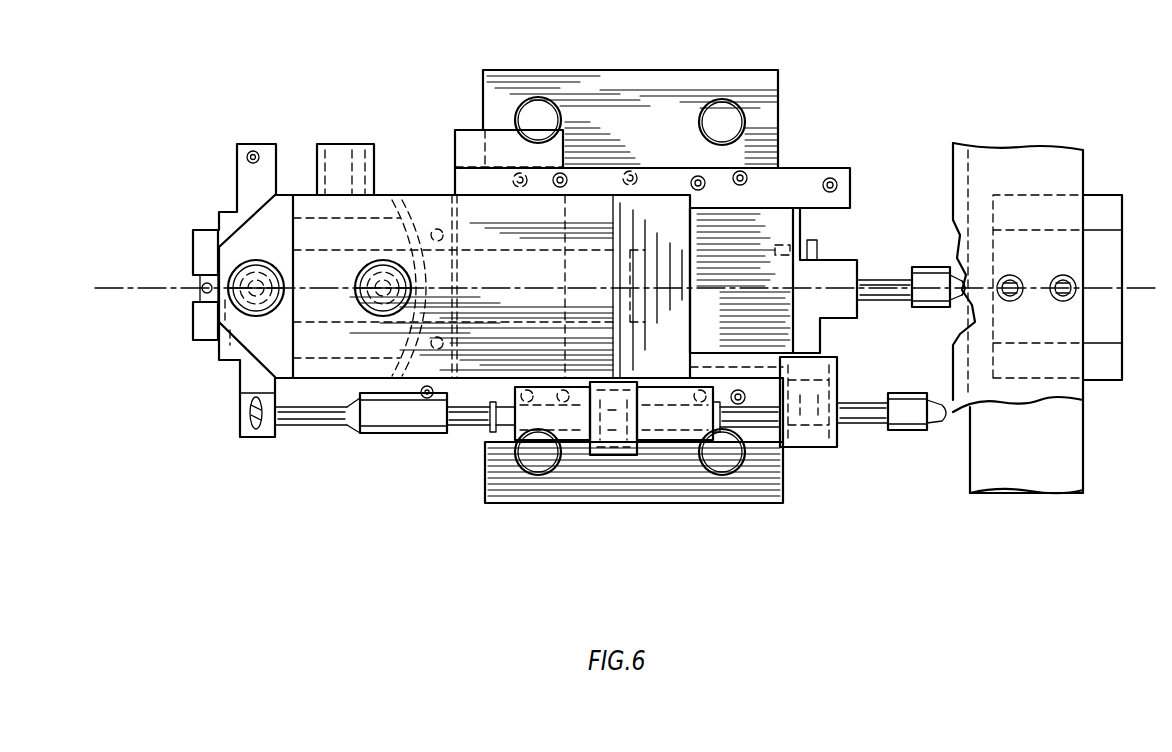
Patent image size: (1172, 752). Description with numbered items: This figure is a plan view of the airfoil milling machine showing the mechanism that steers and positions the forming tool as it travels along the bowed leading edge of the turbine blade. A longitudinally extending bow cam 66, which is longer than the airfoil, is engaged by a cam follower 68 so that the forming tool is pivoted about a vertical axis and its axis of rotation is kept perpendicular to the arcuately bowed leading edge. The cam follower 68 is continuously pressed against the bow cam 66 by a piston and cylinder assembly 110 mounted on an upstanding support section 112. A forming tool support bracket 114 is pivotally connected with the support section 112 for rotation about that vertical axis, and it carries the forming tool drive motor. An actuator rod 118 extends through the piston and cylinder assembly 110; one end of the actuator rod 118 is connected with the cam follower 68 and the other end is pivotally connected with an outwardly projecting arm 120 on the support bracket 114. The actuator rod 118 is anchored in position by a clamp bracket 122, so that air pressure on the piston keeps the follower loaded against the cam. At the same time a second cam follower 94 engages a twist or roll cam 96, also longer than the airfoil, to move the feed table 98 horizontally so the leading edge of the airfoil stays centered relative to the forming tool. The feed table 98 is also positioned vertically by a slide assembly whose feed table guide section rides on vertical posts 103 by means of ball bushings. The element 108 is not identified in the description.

The bow cam 66 is at (956, 368).
The cam follower 68 is at (912, 434).
The cam follower 94 is at (948, 256).
The twist or roll cam 96 is at (968, 318).
The feed table 98 is at (740, 233).
The vertical posts 103 is at (517, 105).
The top plate 108 is at (672, 38).
The piston and cylinder assembly 110 is at (680, 448).
The upstanding support section 112 is at (441, 434).
The forming tool support bracket 114 is at (193, 315).
The actuator rod 118 is at (323, 428).
The outwardly projecting arm 120 is at (263, 437).
The clamp bracket 122 is at (653, 442).